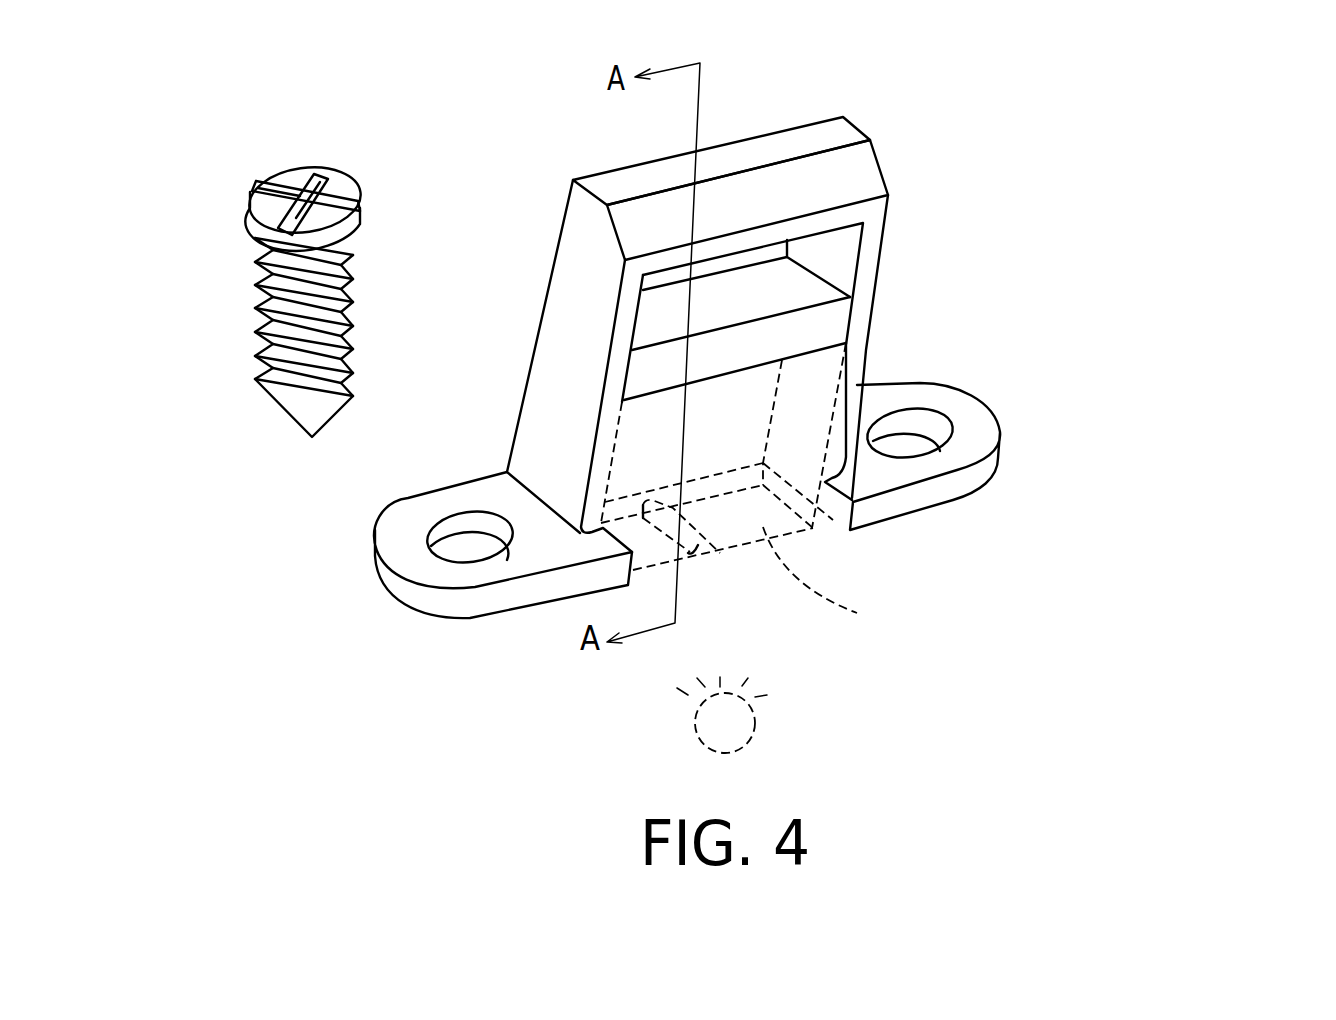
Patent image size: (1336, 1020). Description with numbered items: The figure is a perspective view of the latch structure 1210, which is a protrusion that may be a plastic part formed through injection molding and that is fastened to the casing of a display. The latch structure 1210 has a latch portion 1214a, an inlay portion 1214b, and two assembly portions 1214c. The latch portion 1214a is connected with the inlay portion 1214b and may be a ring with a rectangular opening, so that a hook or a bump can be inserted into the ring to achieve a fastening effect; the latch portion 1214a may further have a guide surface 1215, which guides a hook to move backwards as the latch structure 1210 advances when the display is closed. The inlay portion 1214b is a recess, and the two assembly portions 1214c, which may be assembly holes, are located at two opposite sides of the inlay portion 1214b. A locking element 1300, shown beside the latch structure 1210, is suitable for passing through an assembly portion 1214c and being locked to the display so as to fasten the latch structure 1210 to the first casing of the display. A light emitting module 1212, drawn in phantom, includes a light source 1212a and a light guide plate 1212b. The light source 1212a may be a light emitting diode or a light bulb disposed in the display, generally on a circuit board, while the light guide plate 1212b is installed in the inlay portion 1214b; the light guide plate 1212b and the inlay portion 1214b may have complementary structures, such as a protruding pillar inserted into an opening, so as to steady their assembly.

The locking element 1300 is at (283, 178).
The latch structure 1210 is at (1302, 706).
The guide surface 1215 is at (672, 215).
The latch portion 1214a is at (838, 180).
The inlay portion 1214b is at (791, 440).
The assembly portion 1214c is at (912, 432).
The light emitting module 1212 is at (918, 622).
The light source 1212a is at (735, 718).
The light guide plate 1212b is at (835, 593).